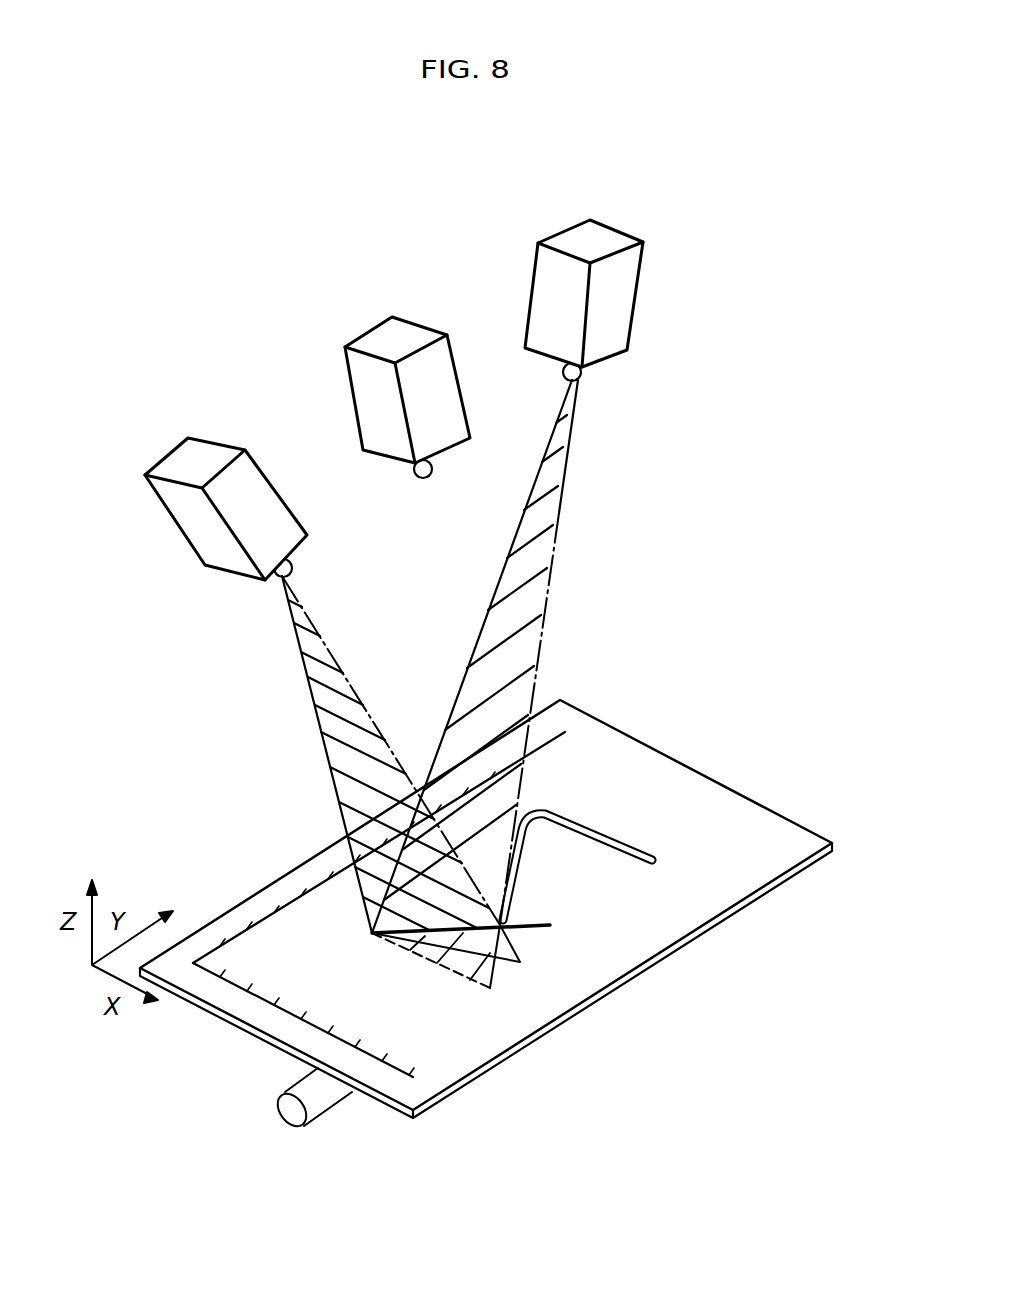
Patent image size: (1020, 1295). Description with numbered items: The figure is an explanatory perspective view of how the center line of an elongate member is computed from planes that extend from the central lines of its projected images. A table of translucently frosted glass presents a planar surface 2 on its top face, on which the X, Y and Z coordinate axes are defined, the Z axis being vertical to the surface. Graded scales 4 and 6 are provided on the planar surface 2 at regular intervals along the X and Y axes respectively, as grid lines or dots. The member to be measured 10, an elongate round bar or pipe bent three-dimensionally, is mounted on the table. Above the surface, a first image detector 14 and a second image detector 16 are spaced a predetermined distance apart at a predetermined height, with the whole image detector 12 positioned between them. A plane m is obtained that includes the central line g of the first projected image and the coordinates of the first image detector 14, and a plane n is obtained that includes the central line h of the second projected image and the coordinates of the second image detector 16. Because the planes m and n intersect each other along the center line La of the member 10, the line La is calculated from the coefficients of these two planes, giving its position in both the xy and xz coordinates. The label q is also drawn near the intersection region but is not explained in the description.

The planar surface 2 is at (723, 797).
The graded scale 4 is at (283, 1013).
The graded scale 6 is at (277, 905).
The member to be measured 10 is at (578, 815).
The whole image detector 12 is at (388, 328).
The first image detector 14 is at (182, 451).
The second image detector 16 is at (592, 233).
The plane m is at (306, 717).
The plane n is at (533, 557).
The center line La is at (545, 928).
The central line h is at (470, 986).
The light section image q is at (508, 963).